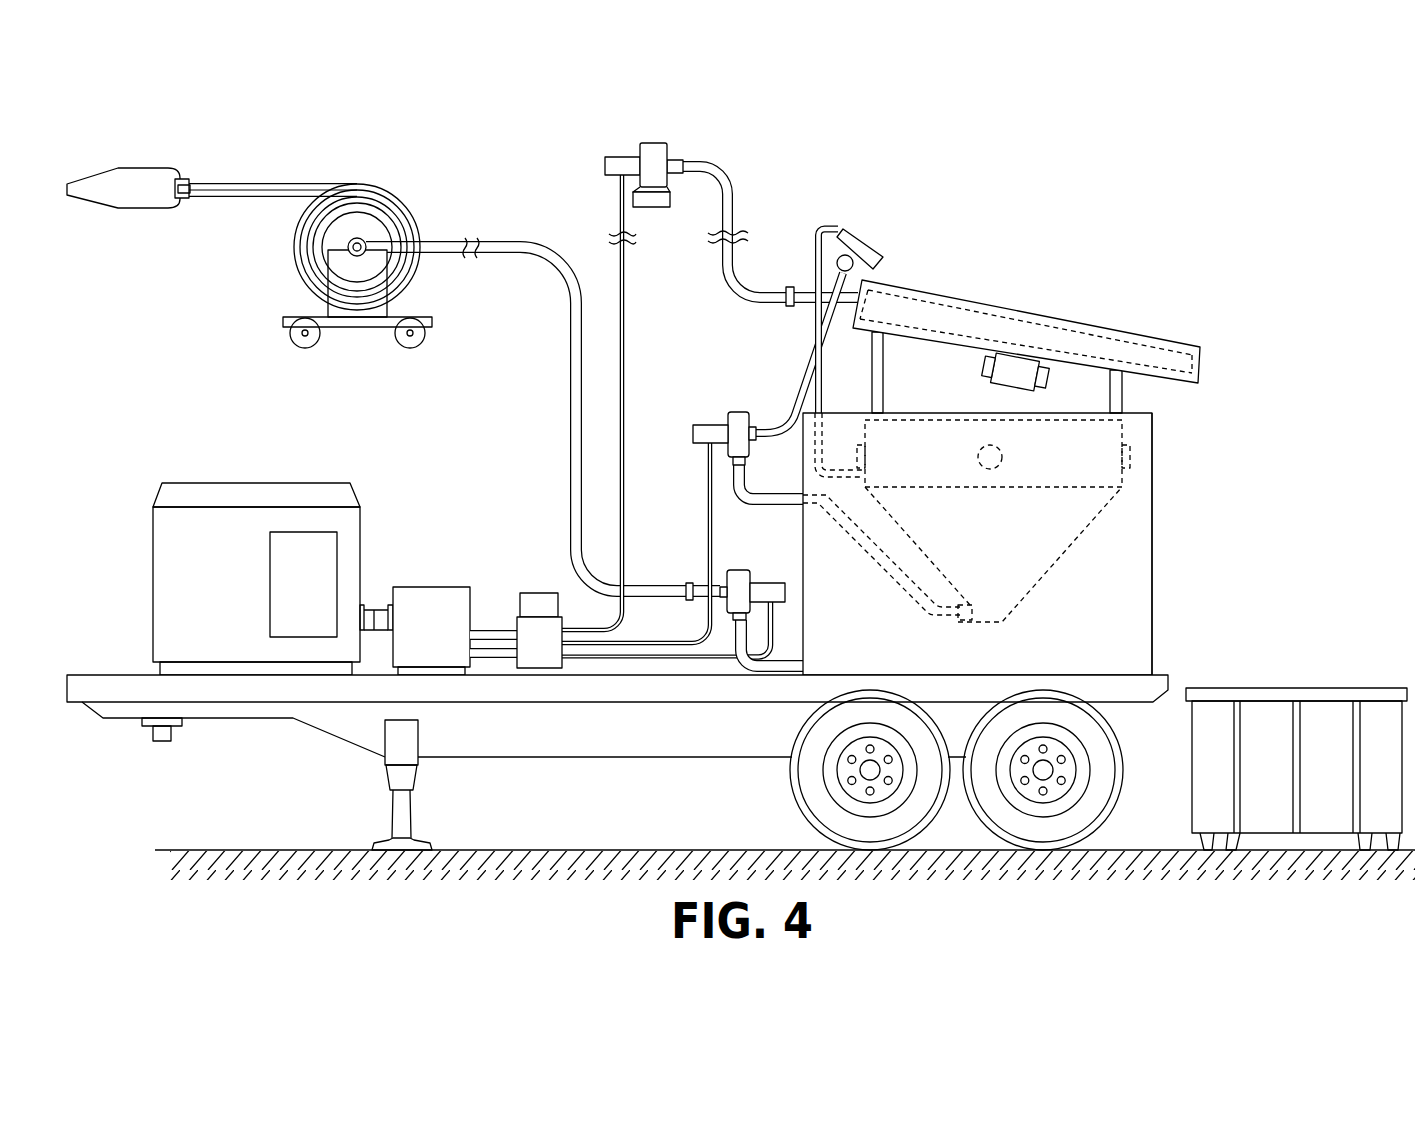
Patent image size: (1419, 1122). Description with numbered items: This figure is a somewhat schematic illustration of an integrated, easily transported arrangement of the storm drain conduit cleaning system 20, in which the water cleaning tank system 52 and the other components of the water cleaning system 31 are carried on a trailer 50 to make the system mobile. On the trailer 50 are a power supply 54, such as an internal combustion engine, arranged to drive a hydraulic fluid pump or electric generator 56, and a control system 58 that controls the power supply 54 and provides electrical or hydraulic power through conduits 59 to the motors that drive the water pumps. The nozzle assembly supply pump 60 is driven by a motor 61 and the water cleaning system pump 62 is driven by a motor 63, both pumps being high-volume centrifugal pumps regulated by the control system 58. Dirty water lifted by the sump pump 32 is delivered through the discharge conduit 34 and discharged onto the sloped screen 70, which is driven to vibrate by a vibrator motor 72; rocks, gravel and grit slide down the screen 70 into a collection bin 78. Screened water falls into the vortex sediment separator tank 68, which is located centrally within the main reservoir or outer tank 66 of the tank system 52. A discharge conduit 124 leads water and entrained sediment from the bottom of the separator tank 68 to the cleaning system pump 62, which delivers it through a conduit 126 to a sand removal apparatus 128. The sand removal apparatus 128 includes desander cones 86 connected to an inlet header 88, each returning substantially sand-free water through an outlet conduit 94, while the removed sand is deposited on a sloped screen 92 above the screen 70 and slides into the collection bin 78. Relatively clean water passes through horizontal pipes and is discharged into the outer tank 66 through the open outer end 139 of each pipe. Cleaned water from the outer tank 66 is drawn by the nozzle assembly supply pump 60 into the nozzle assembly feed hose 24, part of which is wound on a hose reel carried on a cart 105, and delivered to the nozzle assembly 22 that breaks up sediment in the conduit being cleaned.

The storm drain conduit cleaning system 20 is at (514, 134).
The nozzle assembly 22 is at (145, 166).
The nozzle assembly feed hose 24 is at (568, 442).
The water cleaning system 31 is at (1050, 282).
The sump pump 32 is at (653, 143).
The discharge conduit 34 is at (715, 170).
The trailer 50 is at (340, 742).
The water cleaning tank system 52 is at (1175, 520).
The power supply 54 is at (258, 482).
The electric generator 56 is at (435, 586).
The control system 58 is at (542, 592).
The conduits 59 is at (626, 356).
The nozzle assembly supply pump 60 is at (736, 568).
The motor 61 is at (770, 582).
The water cleaning system pump 62 is at (738, 410).
The motor 63 is at (727, 420).
The outer tank 66 is at (1153, 607).
The vortex sediment separator tank 68 is at (1053, 583).
The sloped screen 70 is at (1190, 372).
The vibrator motor 72 is at (1002, 395).
The collection bin 78 is at (1299, 687).
The desander cones 86 is at (881, 250).
The inlet header 88 is at (836, 263).
The sloped screen 92 is at (1203, 350).
The outlet conduit 94 is at (823, 379).
The hose reel cart 105 is at (298, 316).
The discharge conduit 124 is at (733, 480).
The conduit 126 is at (790, 396).
The sand removal apparatus 128 is at (866, 204).
The open outer end 139 is at (1003, 457).